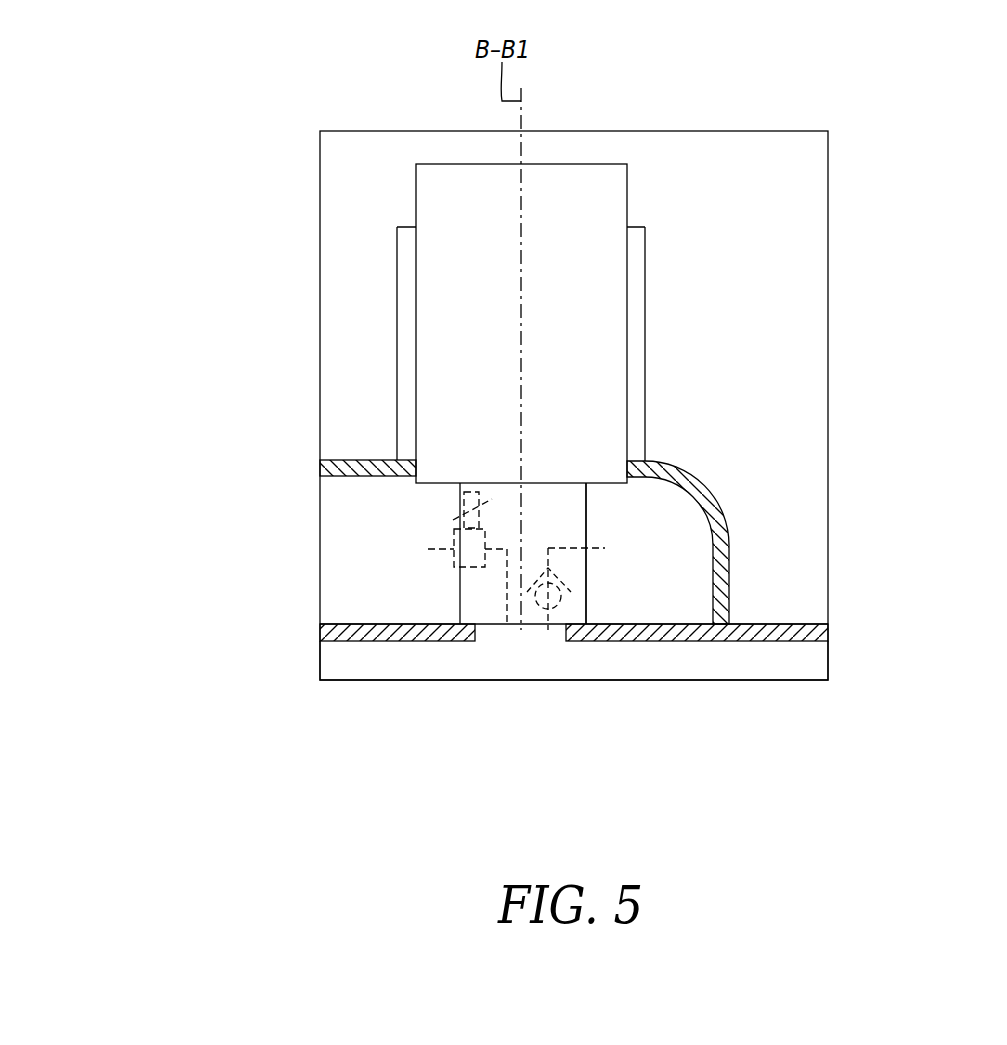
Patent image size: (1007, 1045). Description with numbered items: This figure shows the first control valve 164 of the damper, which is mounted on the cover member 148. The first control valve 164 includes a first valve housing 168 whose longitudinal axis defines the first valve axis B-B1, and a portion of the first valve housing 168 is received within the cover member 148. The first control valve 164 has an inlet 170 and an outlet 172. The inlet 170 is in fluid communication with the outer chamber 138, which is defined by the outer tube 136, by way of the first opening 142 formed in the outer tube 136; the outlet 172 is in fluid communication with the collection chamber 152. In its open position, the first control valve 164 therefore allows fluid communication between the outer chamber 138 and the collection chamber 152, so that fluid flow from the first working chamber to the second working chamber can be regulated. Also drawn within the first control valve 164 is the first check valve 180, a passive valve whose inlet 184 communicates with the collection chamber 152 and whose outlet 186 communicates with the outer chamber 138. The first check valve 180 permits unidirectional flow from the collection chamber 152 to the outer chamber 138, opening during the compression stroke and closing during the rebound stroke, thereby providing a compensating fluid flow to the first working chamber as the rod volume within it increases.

The outer tube 136 is at (818, 633).
The outer chamber 138 is at (820, 662).
The first opening 142 is at (527, 632).
The cover member 148 is at (616, 550).
The collection chamber 152 is at (642, 558).
The first control valve 164 is at (692, 273).
The first valve housing 168 is at (600, 202).
The inlet 170 is at (507, 631).
The outlet 172 is at (428, 549).
The first check valve 180 is at (574, 591).
The inlet of the first check valve 184 is at (610, 546).
The outlet of the first check valve 186 is at (555, 632).